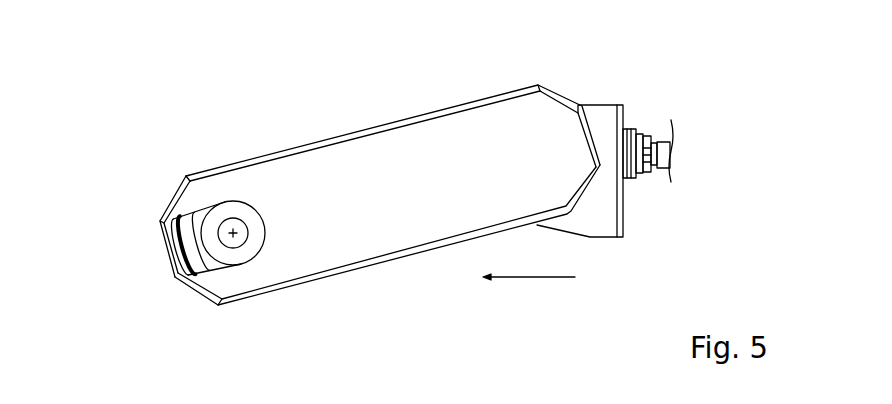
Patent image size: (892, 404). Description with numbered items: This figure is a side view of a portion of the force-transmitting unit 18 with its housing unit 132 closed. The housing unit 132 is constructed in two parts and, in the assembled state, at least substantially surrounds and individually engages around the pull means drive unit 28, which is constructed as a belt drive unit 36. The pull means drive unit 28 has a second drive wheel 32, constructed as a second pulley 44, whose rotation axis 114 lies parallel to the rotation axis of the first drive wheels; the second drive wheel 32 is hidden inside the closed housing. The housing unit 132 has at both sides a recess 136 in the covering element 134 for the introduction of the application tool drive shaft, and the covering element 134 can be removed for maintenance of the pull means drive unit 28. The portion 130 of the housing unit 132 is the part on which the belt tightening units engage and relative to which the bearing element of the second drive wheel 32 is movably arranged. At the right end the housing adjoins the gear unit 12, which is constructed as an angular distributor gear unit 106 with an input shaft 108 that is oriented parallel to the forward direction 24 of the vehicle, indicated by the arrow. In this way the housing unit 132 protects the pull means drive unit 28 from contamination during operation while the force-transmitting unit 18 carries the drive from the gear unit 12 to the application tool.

The force-transmitting unit 18 is at (221, 139).
The housing unit 132 is at (368, 117).
The covering element 134 is at (448, 122).
The pull means drive unit 28 is at (131, 258).
The belt drive unit 36 is at (175, 270).
The recess 136 is at (274, 239).
The portion of housing unit 130 is at (167, 240).
The second drive wheel 32 is at (140, 178).
The second pulley 44 is at (195, 223).
The rotation axis 114 is at (223, 237).
The gear unit 12 is at (651, 125).
The angular distributor gear unit 106 is at (608, 123).
The input shaft 108 is at (667, 155).
The forward direction 24 is at (545, 278).